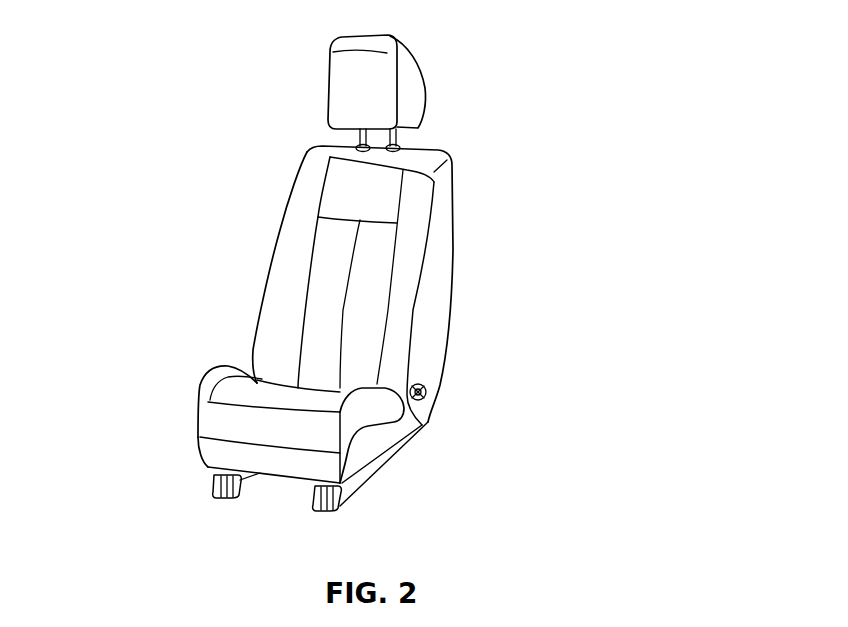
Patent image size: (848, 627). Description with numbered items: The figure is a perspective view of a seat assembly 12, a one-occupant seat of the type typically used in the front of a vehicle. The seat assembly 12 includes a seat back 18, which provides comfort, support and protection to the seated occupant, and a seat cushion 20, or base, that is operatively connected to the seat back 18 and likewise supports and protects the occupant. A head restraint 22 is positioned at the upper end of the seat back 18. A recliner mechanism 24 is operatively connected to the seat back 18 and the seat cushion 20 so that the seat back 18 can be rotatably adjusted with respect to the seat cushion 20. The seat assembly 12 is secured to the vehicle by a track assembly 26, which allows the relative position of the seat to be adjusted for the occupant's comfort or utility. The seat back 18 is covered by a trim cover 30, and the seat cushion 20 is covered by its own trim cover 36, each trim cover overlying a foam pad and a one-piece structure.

The seat assembly 12 is at (547, 104).
The seat back 18 is at (475, 302).
The seat cushion 20 is at (222, 377).
The head restraint 22 is at (343, 82).
The recliner mechanism 24 is at (434, 392).
The track assembly 26 is at (188, 488).
The trim cover 30 is at (287, 230).
The trim cover 36 is at (197, 397).